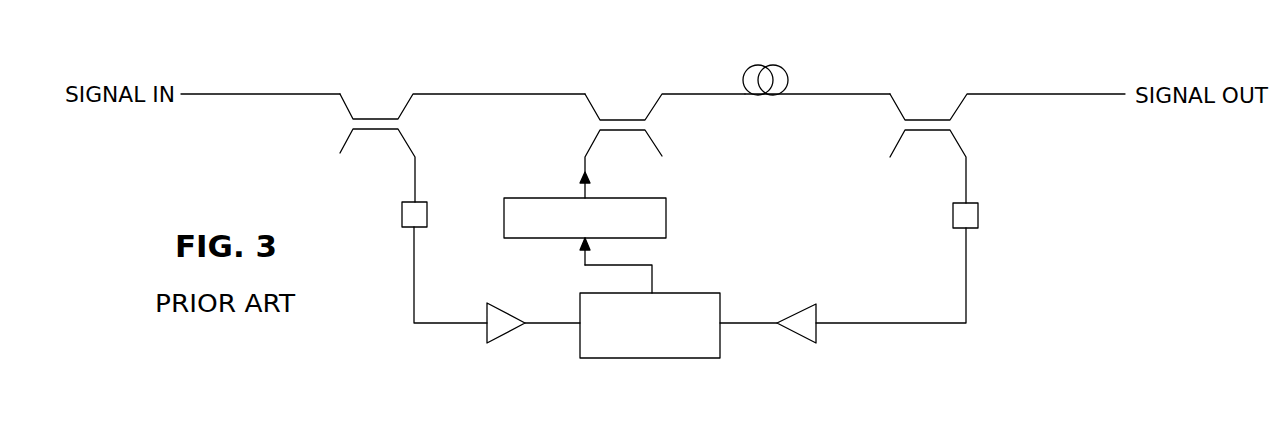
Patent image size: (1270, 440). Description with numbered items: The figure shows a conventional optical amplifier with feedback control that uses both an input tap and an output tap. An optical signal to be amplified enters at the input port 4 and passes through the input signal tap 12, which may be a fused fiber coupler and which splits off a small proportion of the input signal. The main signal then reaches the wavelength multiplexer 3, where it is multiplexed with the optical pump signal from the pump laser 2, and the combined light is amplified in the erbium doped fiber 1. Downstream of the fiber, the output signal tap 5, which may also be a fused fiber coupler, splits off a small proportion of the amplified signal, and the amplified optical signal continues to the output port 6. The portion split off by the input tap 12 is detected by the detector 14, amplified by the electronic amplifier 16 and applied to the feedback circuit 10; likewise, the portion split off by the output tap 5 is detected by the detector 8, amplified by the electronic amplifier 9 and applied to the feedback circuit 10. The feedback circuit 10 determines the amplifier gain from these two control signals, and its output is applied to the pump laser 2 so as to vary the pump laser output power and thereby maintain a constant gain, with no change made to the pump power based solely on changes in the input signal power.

The erbium doped fiber 1 is at (757, 65).
The pump laser 2 is at (668, 218).
The wavelength multiplexer 3 is at (626, 120).
The input port 4 is at (268, 94).
The output signal tap 5 is at (928, 120).
The output port 6 is at (1048, 94).
The detector 8 is at (979, 216).
The electronic amplifier 9 is at (795, 314).
The feedback circuit 10 is at (652, 358).
The input signal tap 12 is at (378, 119).
The detector 14 is at (402, 215).
The electronic amplifier 16 is at (508, 336).